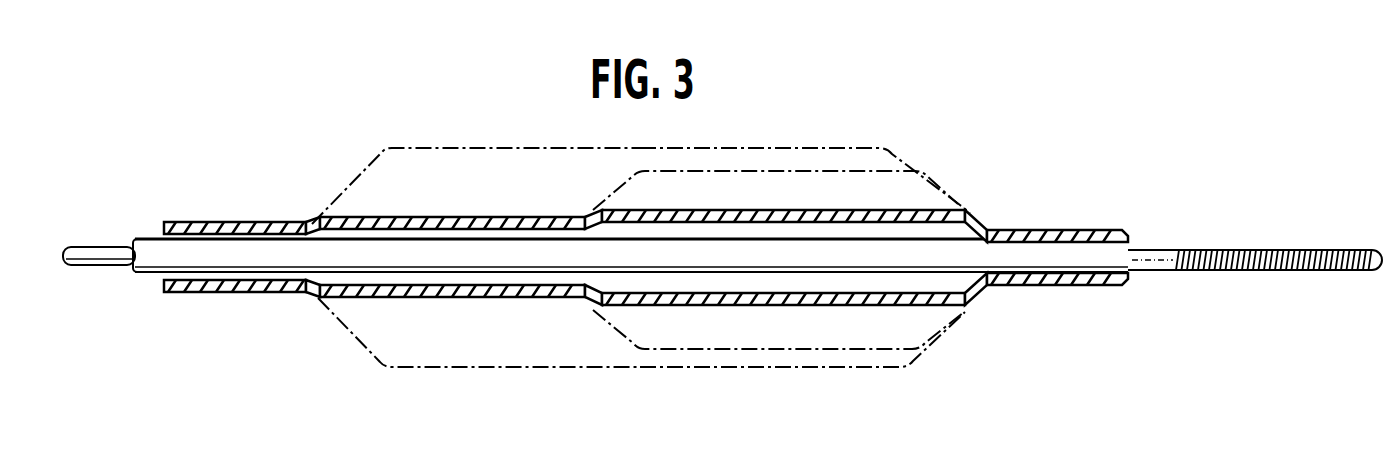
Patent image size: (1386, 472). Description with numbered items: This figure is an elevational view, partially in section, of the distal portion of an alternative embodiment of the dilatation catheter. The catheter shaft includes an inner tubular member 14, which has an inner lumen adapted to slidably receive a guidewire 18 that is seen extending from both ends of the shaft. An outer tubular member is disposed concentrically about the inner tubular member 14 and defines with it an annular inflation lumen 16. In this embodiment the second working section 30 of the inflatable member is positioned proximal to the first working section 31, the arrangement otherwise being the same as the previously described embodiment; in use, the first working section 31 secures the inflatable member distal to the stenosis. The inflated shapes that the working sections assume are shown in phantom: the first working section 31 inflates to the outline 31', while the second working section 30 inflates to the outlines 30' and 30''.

The inner tubular member 14 is at (148, 271).
The annular inflation lumen 16 is at (240, 280).
The guidewire 18 is at (95, 252).
The second working section 30 is at (865, 244).
The first working section 31 is at (461, 244).
The inflated shape of second working section 30' is at (778, 293).
The inflated shape of second working section 30'' is at (805, 280).
The inflated shape of first working section 31' is at (476, 280).